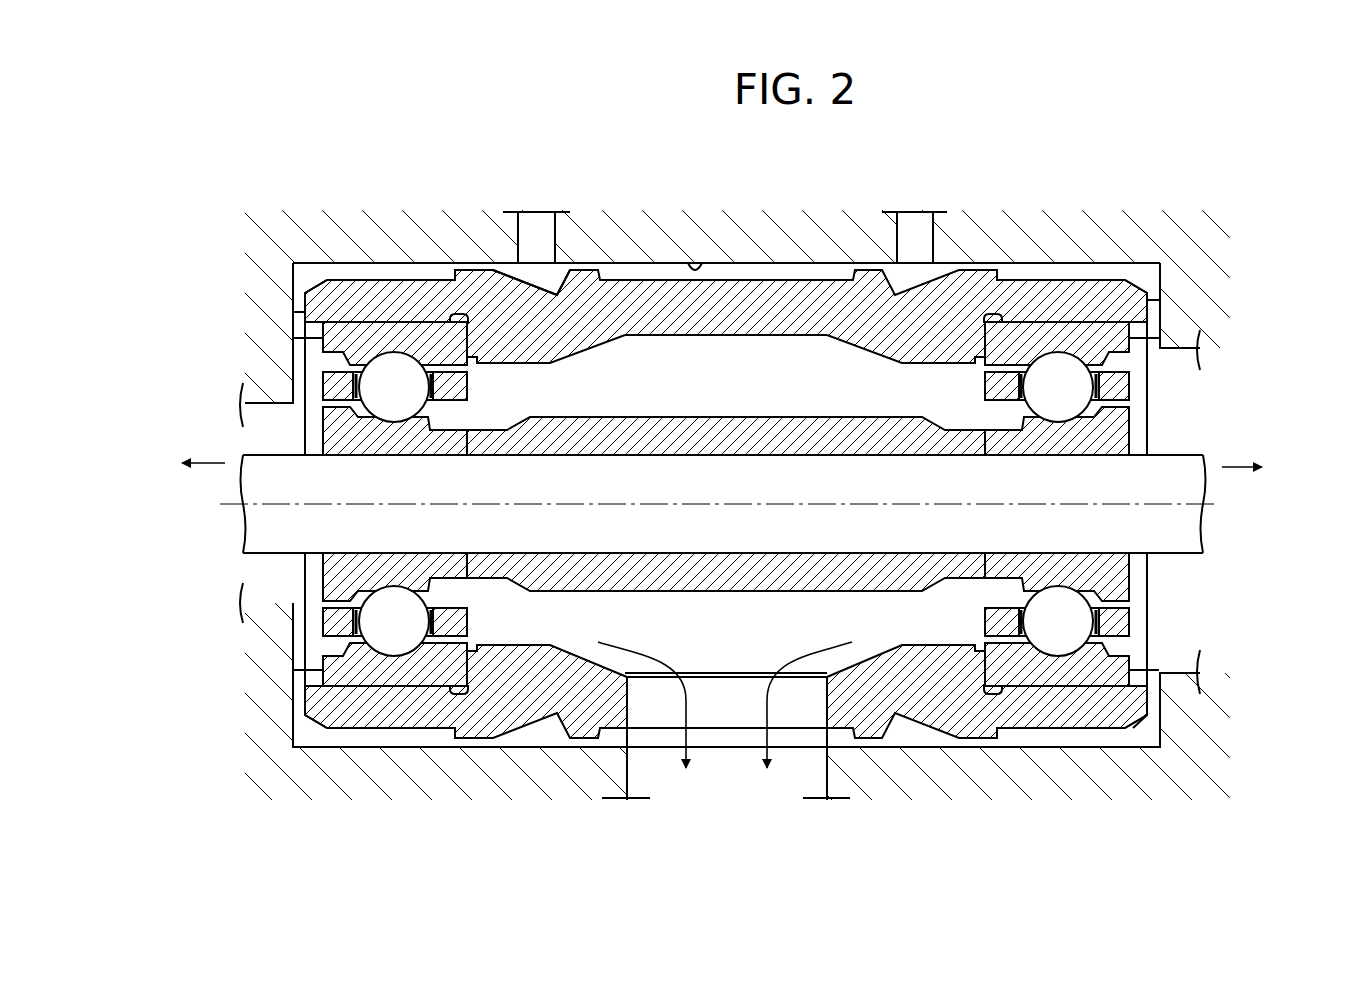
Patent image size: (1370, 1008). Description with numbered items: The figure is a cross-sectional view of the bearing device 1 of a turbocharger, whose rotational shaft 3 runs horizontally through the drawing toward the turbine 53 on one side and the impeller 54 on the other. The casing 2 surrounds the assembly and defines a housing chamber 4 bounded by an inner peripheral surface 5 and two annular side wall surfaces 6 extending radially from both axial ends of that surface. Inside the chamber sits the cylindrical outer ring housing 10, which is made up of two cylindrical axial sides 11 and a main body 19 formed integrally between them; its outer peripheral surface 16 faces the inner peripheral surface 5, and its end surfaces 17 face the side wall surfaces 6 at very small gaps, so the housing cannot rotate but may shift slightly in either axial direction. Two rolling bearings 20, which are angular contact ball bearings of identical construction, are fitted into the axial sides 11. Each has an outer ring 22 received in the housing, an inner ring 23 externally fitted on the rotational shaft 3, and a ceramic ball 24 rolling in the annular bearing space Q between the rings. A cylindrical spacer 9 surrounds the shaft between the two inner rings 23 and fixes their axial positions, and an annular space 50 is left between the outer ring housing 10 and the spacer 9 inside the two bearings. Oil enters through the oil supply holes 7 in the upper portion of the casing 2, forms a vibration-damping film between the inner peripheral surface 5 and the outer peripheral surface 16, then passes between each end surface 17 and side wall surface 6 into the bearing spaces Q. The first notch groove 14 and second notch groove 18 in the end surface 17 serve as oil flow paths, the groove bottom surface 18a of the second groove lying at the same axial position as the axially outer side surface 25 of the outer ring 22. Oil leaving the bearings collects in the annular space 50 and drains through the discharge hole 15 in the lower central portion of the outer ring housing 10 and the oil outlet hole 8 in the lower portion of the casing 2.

The bearing device 1 is at (726, 439).
The casing 2 is at (642, 245).
The rotational shaft 3 is at (1188, 556).
The housing chamber 4 is at (822, 258).
The inner peripheral surface 5 is at (694, 263).
The side wall surface 6 is at (309, 262).
The oil supply hole 7 is at (530, 213).
The oil outlet hole 8 is at (632, 770).
The spacer 9 is at (806, 437).
The outer ring housing 10 is at (750, 300).
The axial side 11 is at (385, 292).
The first notch groove 14 is at (1168, 282).
The discharge hole 15 is at (812, 700).
The outer peripheral surface 16 is at (579, 285).
The end surface 17 is at (305, 312).
The second notch groove 18 is at (1145, 703).
The groove bottom surface 18a is at (1150, 735).
The main body 19 is at (788, 298).
The rolling bearing 20 is at (317, 365).
The outer ring 22 is at (352, 333).
The inner ring 23 is at (333, 438).
The ball 24 is at (406, 400).
The axially outer side surface 25 is at (323, 338).
The annular space 50 is at (711, 403).
The bearing space Q is at (466, 387).
The turbine 53 is at (1276, 484).
The impeller 54 is at (167, 480).